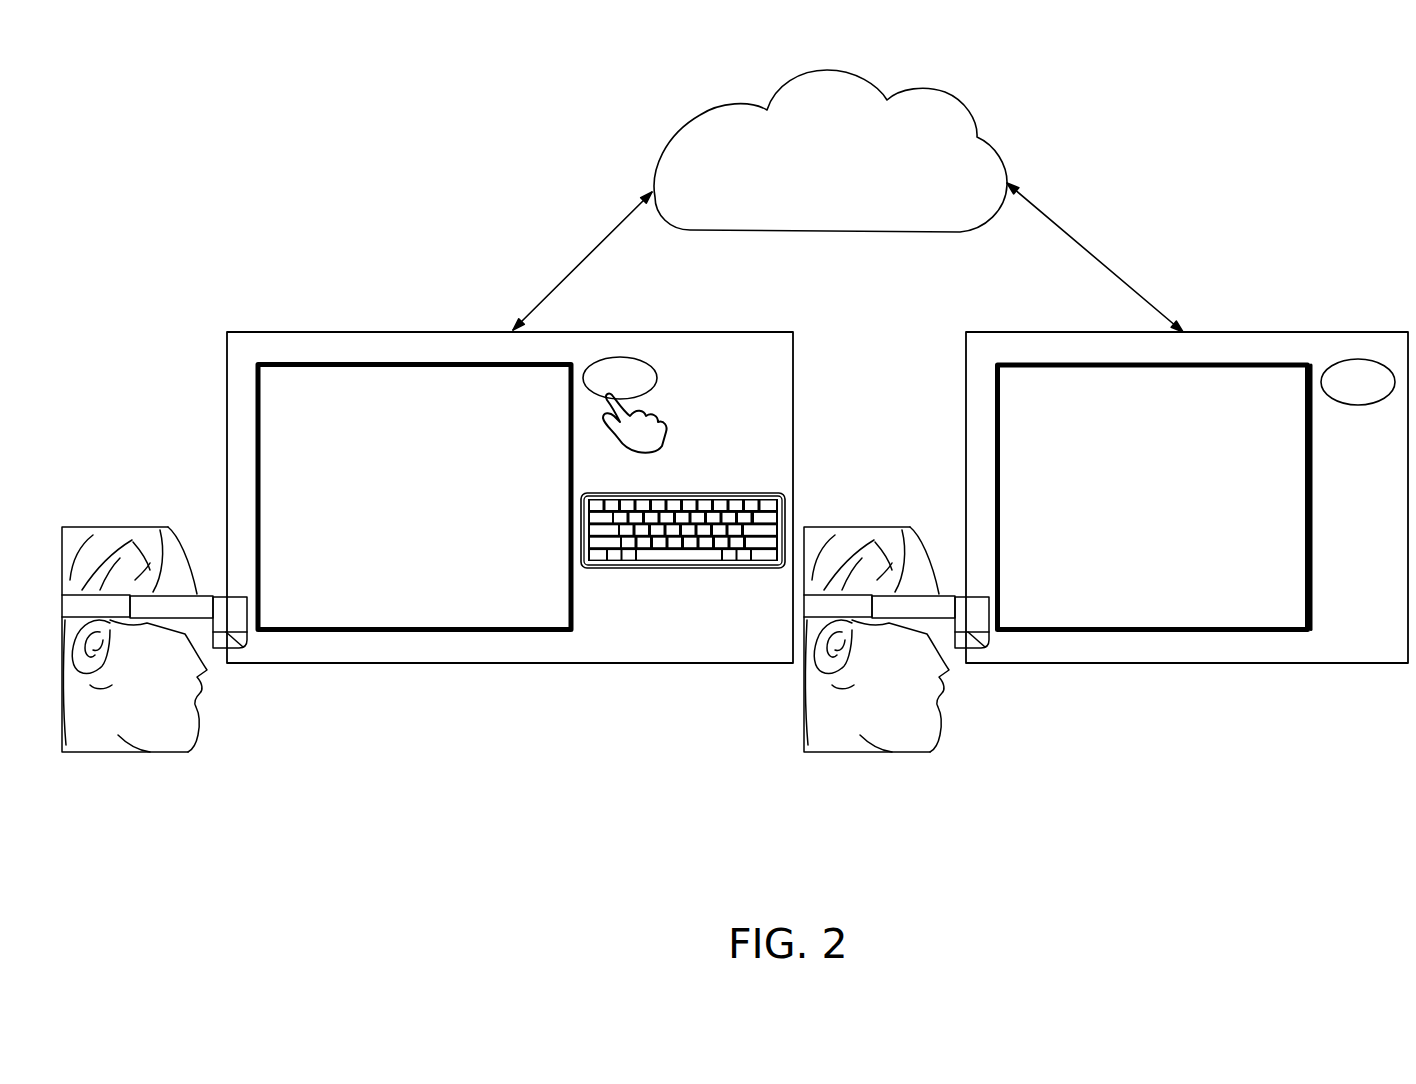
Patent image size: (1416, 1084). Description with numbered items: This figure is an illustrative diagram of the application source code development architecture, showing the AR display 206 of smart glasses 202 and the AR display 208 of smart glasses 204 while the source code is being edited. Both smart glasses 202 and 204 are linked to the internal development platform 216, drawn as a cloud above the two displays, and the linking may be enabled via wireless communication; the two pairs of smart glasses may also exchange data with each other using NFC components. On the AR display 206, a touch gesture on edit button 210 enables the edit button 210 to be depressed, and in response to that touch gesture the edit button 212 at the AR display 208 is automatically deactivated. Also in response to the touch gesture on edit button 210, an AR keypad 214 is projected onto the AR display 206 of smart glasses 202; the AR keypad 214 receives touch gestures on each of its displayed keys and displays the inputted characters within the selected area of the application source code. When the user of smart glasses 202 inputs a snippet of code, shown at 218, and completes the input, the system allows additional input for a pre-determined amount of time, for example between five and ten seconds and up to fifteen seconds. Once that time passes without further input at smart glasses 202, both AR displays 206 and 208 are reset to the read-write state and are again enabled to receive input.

The smart glasses 202 is at (110, 527).
The smart glasses 204 is at (878, 527).
The AR display 206 is at (320, 332).
The AR display 208 is at (1288, 332).
The edit button 210 is at (657, 380).
The edit button 212 is at (1355, 405).
The AR keypad 214 is at (675, 568).
The internal development platform 216 is at (825, 70).
The snippet of code 218 is at (492, 478).